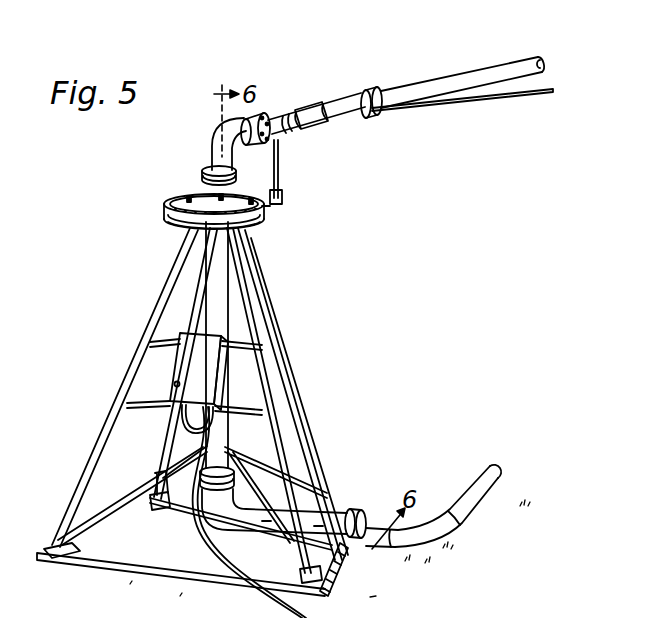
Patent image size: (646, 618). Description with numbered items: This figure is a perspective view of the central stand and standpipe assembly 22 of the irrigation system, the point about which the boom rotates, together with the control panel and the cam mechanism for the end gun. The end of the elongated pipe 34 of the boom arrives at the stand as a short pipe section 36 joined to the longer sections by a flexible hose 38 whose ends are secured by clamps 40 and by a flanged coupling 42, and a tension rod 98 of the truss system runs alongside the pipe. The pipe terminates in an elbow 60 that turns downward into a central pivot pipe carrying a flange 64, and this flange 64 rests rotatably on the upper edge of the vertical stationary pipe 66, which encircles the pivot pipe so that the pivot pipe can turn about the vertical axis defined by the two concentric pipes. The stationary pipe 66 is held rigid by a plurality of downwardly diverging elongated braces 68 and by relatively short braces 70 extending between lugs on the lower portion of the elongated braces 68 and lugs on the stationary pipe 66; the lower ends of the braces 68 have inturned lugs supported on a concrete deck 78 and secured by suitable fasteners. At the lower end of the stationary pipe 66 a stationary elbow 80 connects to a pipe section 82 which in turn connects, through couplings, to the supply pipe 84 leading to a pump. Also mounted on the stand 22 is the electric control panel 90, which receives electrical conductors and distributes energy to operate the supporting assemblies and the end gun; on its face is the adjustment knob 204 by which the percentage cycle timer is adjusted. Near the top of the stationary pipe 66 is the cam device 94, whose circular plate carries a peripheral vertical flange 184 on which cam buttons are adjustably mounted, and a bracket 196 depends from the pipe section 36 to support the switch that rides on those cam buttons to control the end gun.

The stand and standpipe assembly 22 is at (192, 423).
The elongated pipe 34 is at (536, 51).
The pipe section 36 is at (458, 72).
The flexible hose 38 is at (308, 111).
The clamp 40 is at (326, 118).
The flanged coupling 42 is at (398, 73).
The elbow 60 is at (216, 141).
The flange 64 is at (203, 178).
The vertical stationary pipe 66 is at (217, 298).
The elongated brace 68 is at (296, 388).
The short brace 70 is at (112, 498).
The concrete deck 78 is at (102, 553).
The stationary elbow 80 is at (236, 525).
The pipe section 82 is at (343, 517).
The supply pipe 84 is at (471, 490).
The electric control panel 90 is at (186, 360).
The cam device 94 is at (160, 212).
The tension rod 98 is at (503, 97).
The peripheral vertical flange 184 is at (170, 217).
The bracket 196 is at (279, 158).
The adjustment knob 204 is at (174, 384).